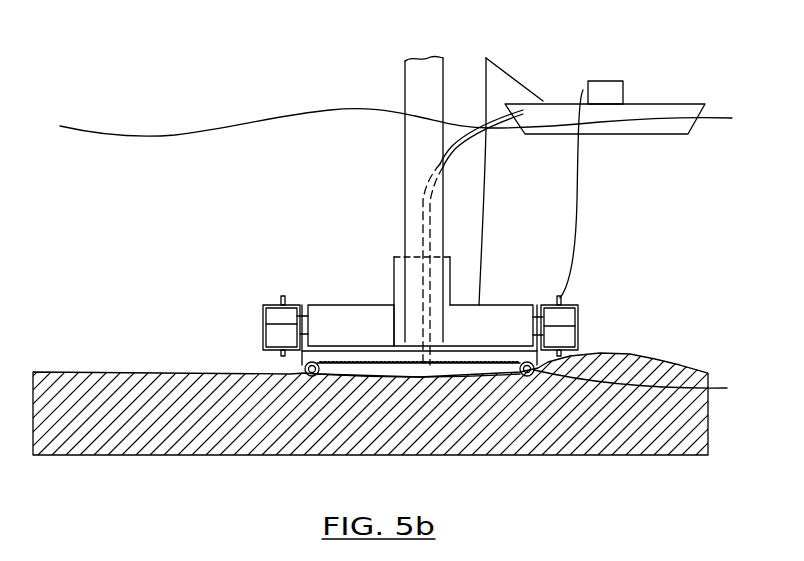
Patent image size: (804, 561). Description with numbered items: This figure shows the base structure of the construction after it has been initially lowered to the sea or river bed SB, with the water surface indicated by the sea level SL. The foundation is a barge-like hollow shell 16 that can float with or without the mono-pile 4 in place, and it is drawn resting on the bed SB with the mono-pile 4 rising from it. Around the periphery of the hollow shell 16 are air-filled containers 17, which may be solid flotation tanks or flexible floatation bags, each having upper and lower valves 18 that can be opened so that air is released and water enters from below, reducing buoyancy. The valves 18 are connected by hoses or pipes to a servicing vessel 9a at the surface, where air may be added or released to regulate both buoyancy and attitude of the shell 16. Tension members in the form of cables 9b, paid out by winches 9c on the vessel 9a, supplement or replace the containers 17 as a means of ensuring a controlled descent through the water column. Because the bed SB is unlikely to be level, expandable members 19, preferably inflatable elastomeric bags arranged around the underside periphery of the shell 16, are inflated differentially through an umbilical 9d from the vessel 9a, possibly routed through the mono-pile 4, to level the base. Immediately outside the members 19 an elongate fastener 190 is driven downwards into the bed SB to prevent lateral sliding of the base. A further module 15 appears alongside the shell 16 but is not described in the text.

The mono-pile 4 is at (422, 88).
The servicing vessel 9a is at (658, 103).
The cables 9b is at (486, 167).
The winches 9c is at (505, 68).
The umbilical 9d is at (480, 127).
The first buoyancy/thruster module 15 is at (355, 303).
The hollow shell 16 is at (478, 327).
The air-filled containers 17 is at (263, 321).
The valves 18 is at (283, 297).
The expandable members 19 is at (527, 376).
The elongate fastener 190 is at (651, 386).
The sea level SL is at (396, 121).
The seabed SB is at (402, 395).